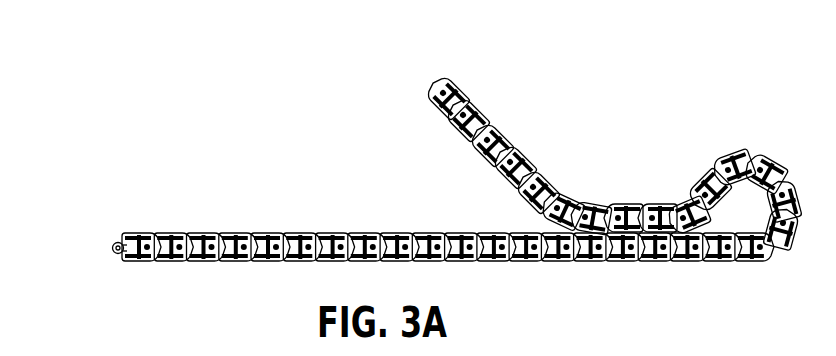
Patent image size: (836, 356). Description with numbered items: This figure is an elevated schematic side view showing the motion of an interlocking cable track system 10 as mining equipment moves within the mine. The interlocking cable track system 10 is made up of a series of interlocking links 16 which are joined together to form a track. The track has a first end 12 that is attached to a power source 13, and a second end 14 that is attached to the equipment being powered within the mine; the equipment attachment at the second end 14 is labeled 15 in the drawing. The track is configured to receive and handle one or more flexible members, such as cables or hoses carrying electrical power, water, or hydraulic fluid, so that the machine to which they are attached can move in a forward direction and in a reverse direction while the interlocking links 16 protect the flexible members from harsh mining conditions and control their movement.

The interlocking cable track system 10 is at (180, 70).
The first end 12 is at (133, 262).
The power source 13 is at (62, 285).
The second end 14 is at (455, 92).
The equipment attachment 15 is at (503, 46).
The interlocking links 16 is at (618, 263).